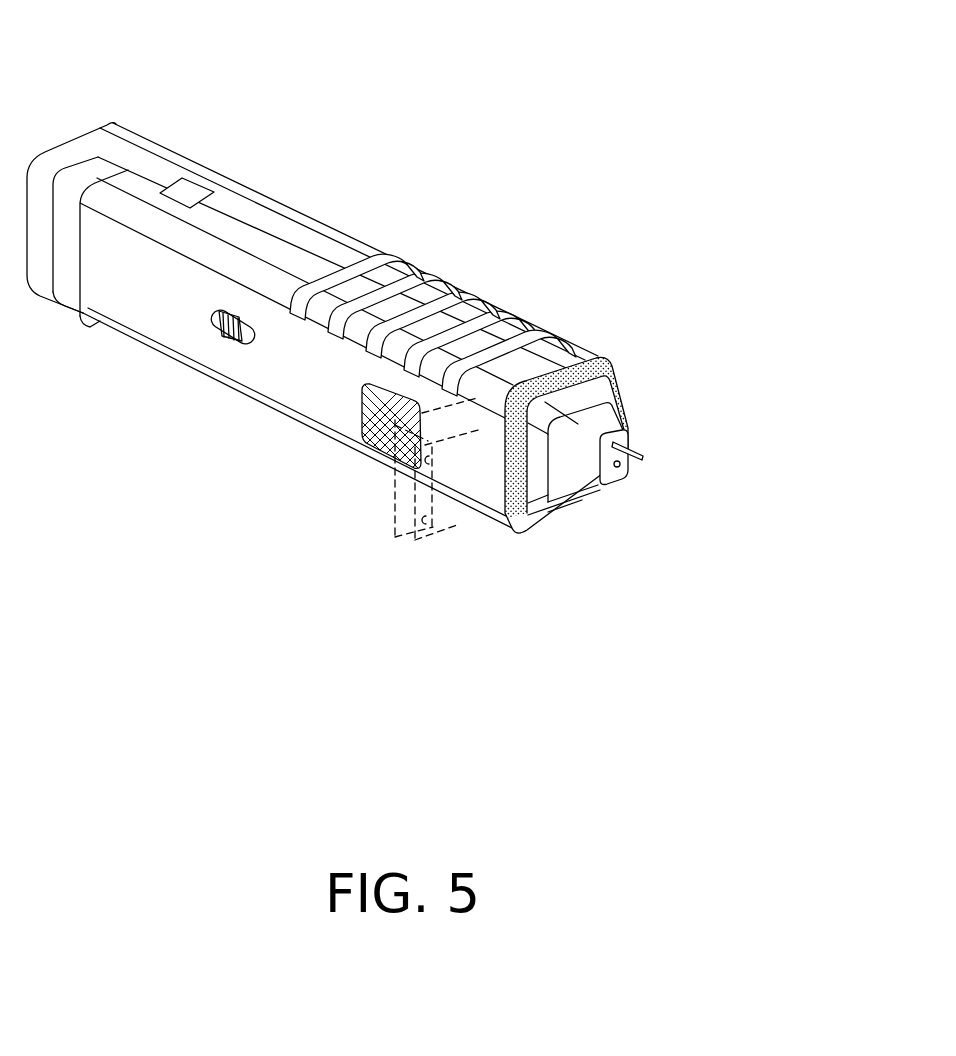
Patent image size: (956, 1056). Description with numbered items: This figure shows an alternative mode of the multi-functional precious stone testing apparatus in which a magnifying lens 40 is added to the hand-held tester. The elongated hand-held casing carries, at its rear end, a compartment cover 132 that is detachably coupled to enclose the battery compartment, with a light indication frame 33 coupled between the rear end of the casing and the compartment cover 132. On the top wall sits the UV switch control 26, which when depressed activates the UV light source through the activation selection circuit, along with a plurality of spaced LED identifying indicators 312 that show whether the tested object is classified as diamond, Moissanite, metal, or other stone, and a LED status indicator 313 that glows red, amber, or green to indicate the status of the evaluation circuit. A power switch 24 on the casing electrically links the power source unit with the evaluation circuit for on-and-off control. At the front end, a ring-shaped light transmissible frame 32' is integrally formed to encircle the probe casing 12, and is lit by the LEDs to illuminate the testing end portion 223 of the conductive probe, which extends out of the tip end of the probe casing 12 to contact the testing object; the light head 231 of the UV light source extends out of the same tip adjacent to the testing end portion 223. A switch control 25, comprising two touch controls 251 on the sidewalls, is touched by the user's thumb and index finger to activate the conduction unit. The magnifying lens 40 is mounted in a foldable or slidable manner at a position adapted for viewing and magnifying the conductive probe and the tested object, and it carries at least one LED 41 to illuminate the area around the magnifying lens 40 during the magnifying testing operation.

The compartment cover 132 is at (96, 140).
The light indication frame 33 is at (131, 160).
The UV switch control 26 is at (190, 188).
The LED identifying indicators 312 is at (493, 312).
The LED status indicator 313 is at (511, 340).
The light transmissible frame 32' is at (611, 406).
The probe casing 12 is at (605, 422).
The testing end portion 223 is at (642, 455).
The light head 231 is at (620, 468).
The power switch 24 is at (223, 338).
The magnifying lens 40 is at (470, 518).
The LED 41 is at (428, 520).
The touch controls 251 is at (382, 447).
The switch control 25 is at (478, 627).